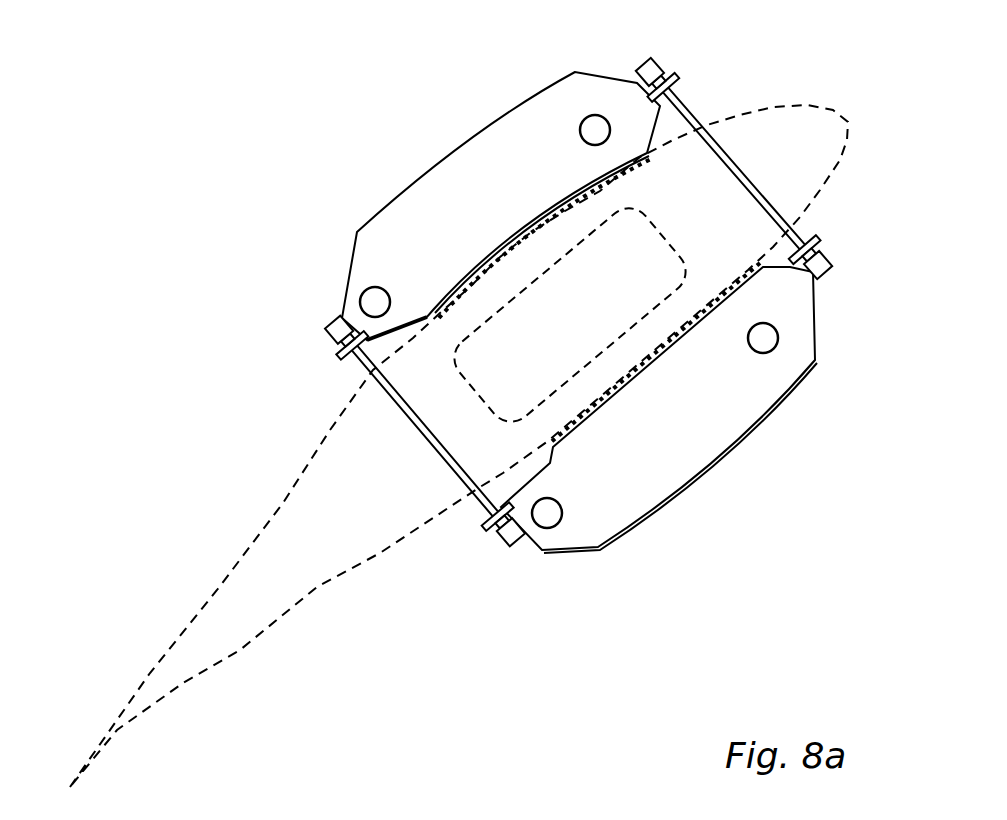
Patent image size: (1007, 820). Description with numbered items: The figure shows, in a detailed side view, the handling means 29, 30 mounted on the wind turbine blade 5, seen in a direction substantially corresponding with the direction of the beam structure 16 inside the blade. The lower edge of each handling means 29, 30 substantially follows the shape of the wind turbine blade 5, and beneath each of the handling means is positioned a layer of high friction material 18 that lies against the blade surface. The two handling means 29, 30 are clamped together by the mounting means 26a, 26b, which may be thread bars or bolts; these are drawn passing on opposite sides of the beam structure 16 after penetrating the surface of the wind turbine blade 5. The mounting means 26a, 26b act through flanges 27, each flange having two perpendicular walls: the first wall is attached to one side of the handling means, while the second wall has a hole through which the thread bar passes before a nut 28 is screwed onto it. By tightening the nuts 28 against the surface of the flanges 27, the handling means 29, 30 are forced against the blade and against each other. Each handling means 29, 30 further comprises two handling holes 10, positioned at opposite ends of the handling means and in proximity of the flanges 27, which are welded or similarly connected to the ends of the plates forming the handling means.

The wind turbine blade 5 is at (253, 675).
The handling holes 10 is at (584, 119).
The beam structure 16 is at (470, 323).
The layer of high friction material 18 is at (463, 277).
The mounting means 26a is at (325, 321).
The mounting means 26b is at (697, 118).
The flange 27 is at (350, 347).
The nut 28 is at (503, 542).
The handling means 29 is at (457, 167).
The handling means 30 is at (723, 427).